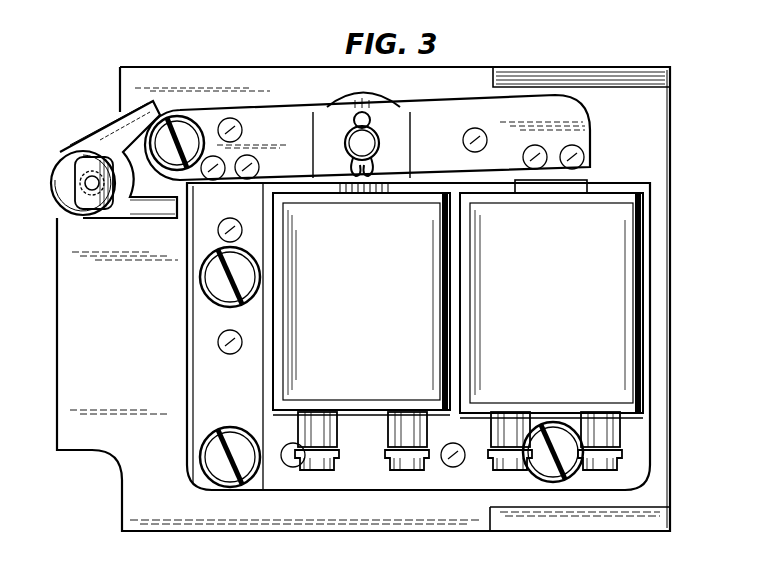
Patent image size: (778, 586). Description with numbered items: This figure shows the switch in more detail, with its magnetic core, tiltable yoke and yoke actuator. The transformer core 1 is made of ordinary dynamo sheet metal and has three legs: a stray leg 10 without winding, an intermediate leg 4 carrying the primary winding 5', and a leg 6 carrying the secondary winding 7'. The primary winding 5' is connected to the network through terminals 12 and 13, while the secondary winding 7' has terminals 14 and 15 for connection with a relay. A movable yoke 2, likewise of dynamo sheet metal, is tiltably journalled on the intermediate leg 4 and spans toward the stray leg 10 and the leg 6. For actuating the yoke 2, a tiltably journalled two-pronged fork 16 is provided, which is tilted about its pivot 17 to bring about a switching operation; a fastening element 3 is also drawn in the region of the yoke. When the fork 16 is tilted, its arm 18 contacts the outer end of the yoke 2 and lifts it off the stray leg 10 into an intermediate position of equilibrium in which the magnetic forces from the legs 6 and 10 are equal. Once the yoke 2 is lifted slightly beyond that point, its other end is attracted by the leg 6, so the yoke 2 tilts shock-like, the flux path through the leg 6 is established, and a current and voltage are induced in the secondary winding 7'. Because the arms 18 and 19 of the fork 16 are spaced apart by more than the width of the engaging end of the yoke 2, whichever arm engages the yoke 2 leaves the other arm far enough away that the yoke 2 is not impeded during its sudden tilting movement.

The transformer core 1 is at (433, 480).
The movable yoke 2 is at (270, 122).
The fastening screw 3 is at (349, 140).
The intermediate leg 4 is at (382, 195).
The primary winding 5' is at (342, 304).
The leg 6 is at (568, 184).
The secondary winding 7' is at (582, 305).
The stray leg 10 is at (200, 393).
The terminal 12 is at (312, 430).
The terminal 13 is at (403, 433).
The terminal 14 is at (503, 428).
The terminal 15 is at (602, 427).
The two-pronged fork 16 is at (62, 172).
The pivot 17 is at (90, 183).
The arm 18 is at (152, 219).
The arm 19 is at (143, 114).